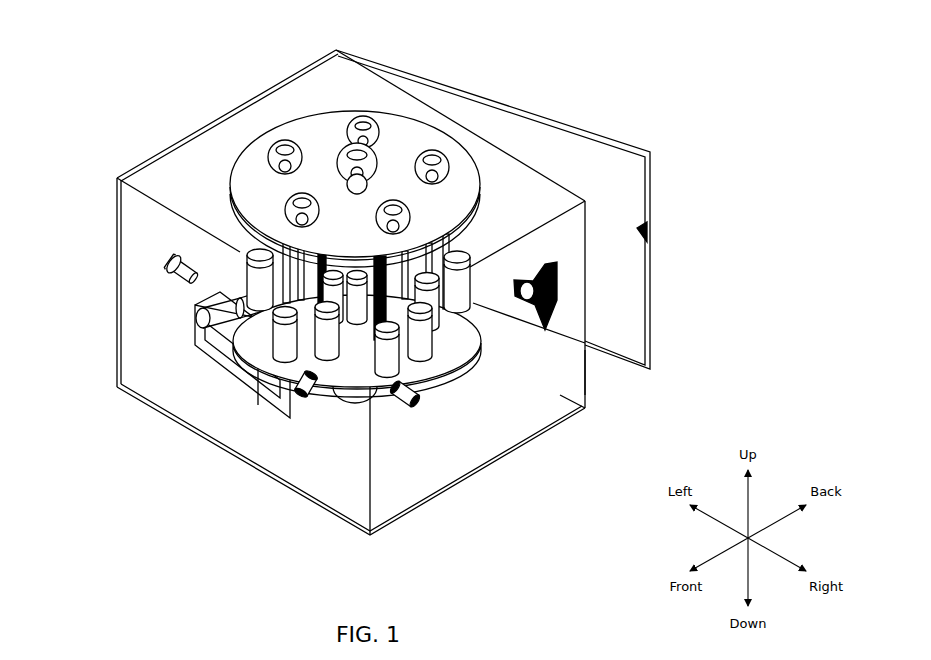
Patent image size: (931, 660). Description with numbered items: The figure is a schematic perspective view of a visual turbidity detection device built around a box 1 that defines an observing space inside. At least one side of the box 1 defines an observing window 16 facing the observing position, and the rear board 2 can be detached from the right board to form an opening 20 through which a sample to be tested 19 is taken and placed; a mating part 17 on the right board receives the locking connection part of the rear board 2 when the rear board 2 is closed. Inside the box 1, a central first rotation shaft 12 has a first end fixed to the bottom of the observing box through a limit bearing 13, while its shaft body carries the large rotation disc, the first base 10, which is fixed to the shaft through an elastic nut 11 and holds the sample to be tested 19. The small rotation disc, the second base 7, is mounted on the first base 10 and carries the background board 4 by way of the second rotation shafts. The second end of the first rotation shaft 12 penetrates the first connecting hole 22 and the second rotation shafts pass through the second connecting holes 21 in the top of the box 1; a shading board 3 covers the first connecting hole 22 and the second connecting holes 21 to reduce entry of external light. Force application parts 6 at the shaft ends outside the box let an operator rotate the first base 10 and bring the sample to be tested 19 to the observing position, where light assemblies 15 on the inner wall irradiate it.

The box 1 is at (482, 138).
The rear board 2 is at (607, 135).
The shading board 3 is at (231, 186).
The background board 4 is at (445, 343).
The force application part 6 is at (360, 138).
The second base 7 is at (586, 389).
The first base 10 is at (203, 300).
The elastic nut 11 is at (352, 368).
The first rotation shaft 12 is at (262, 380).
The limit bearing 13 is at (349, 377).
The light assembly 15 is at (162, 258).
The observing window 16 is at (197, 360).
The mating part 17 is at (537, 291).
The sample to be tested 19 is at (432, 388).
The opening 20 is at (597, 372).
The second connecting hole 21 is at (392, 114).
The first connecting hole 22 is at (375, 176).